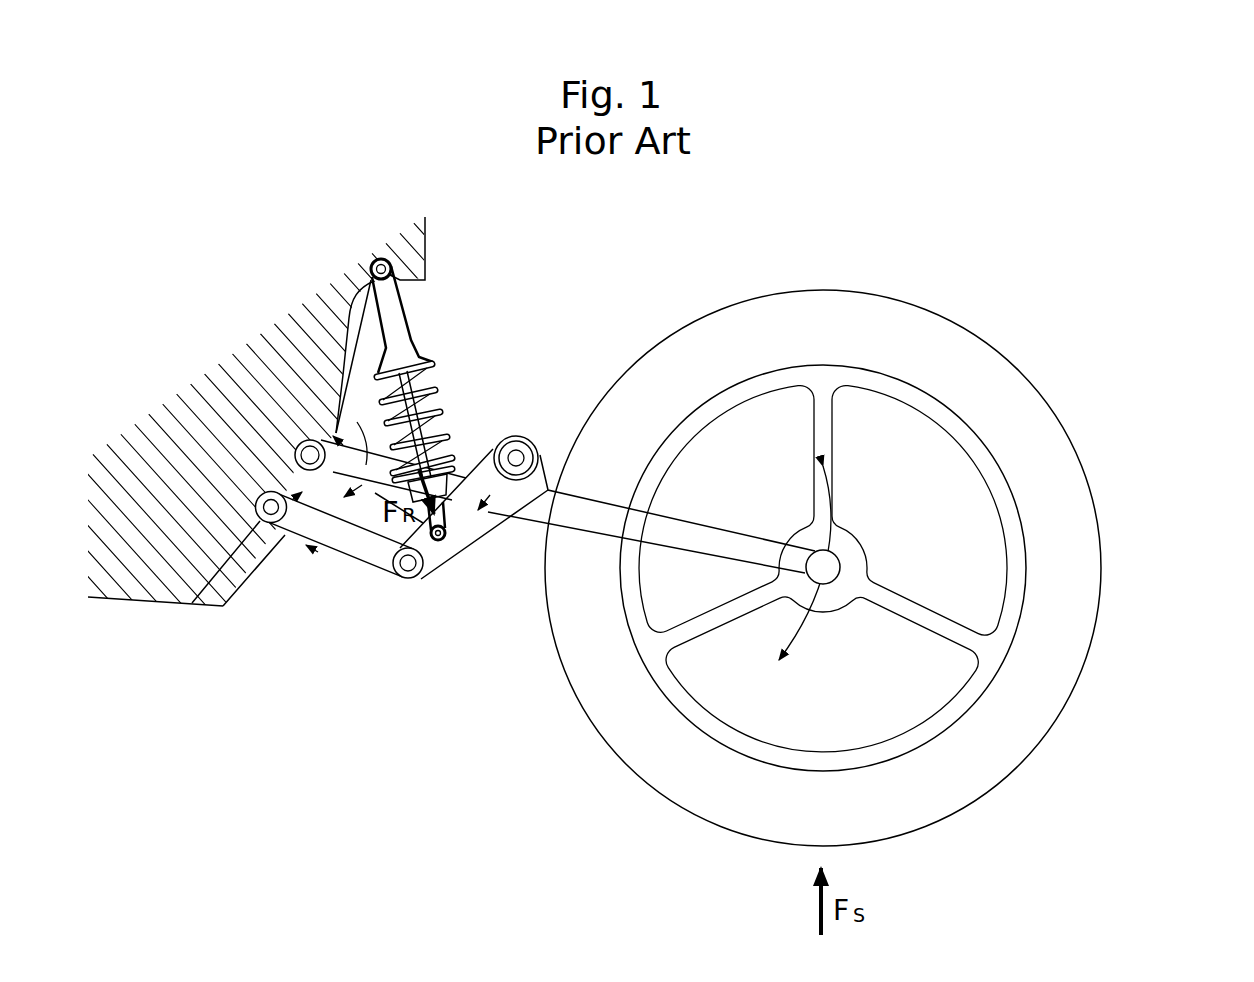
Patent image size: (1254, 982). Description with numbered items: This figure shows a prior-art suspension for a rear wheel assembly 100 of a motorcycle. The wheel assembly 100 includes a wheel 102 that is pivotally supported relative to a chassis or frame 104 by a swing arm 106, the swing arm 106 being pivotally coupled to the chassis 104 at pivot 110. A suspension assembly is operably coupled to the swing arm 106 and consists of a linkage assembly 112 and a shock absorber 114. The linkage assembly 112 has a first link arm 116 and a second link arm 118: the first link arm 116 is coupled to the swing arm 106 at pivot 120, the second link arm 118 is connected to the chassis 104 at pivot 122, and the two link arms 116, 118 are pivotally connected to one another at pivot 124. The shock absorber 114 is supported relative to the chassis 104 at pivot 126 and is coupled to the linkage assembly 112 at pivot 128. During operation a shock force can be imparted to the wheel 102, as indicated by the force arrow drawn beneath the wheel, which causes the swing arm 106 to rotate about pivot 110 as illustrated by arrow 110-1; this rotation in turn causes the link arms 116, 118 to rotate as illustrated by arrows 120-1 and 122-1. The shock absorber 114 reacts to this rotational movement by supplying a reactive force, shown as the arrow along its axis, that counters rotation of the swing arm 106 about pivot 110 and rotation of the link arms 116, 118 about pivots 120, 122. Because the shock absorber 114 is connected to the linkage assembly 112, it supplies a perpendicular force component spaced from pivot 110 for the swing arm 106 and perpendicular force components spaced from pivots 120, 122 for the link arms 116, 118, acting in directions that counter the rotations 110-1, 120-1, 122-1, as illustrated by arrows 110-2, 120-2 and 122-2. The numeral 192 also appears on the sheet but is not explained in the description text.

The rear wheel assembly 100 is at (845, 266).
The wheel 102 is at (1073, 517).
The chassis or frame 104 is at (155, 450).
The swing arm 106 is at (688, 533).
The pivot 110 is at (310, 455).
The arrow 110-1 is at (385, 345).
The arrow 110-2 is at (427, 394).
The linkage assembly 112 is at (407, 577).
The shock absorber 114 is at (423, 429).
The first link arm 116 is at (484, 530).
The second link arm 118 is at (348, 543).
The pivot 120 is at (535, 439).
The arrow 120-1 is at (497, 442).
The arrow 120-2 is at (474, 445).
The pivot 122 is at (243, 584).
The arrow 122-1 is at (283, 535).
The arrow 122-2 is at (298, 552).
The pivot 124 is at (413, 580).
The pivot 126 is at (372, 262).
The pivot 128 is at (443, 547).
The ground 192 is at (517, 723).